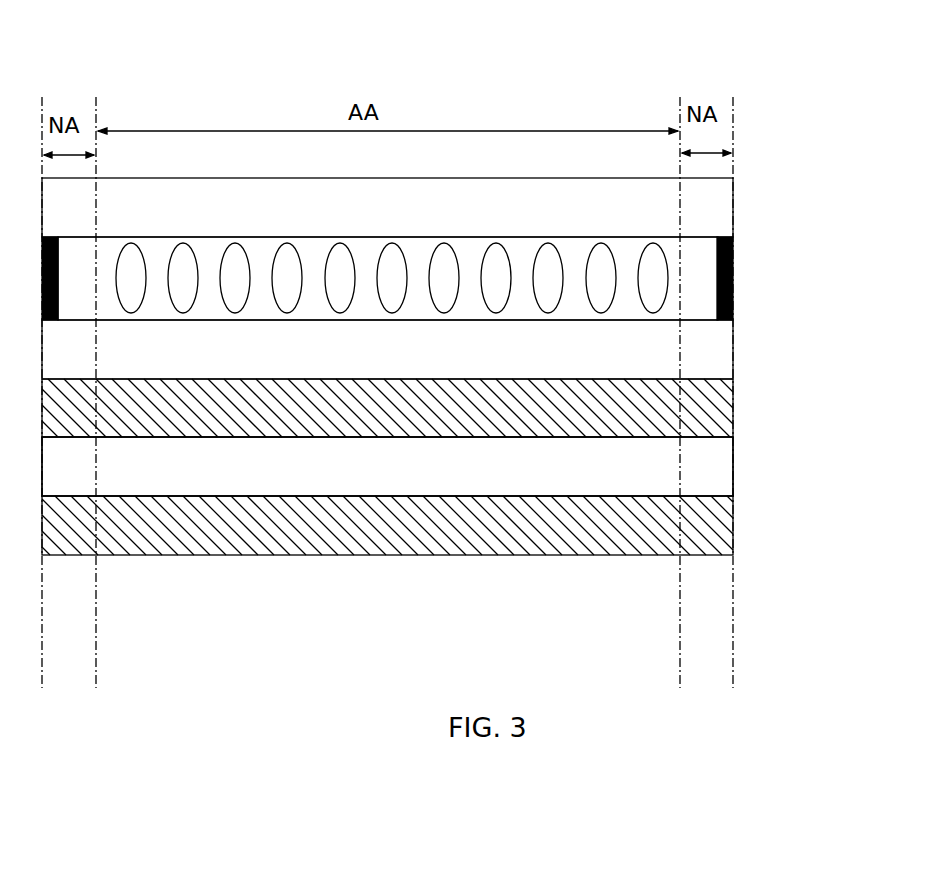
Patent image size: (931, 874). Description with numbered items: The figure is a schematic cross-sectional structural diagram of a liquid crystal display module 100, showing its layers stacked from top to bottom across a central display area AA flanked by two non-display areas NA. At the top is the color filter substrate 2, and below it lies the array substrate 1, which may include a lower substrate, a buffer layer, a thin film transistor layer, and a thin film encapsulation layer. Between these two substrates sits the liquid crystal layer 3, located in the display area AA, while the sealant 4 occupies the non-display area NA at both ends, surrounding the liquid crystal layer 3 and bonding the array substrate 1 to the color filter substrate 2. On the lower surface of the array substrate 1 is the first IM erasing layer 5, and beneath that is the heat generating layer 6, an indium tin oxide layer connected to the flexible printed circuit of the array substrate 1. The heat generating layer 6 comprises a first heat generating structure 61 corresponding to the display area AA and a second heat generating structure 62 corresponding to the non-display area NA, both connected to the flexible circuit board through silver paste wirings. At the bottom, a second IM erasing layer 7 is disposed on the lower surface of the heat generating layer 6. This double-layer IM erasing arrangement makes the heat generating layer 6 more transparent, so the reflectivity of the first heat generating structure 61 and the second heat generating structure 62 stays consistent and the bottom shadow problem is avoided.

The liquid crystal display module 100 is at (148, 65).
The array substrate 1 is at (735, 347).
The color filter substrate 2 is at (735, 207).
The liquid crystal layer 3 is at (665, 277).
The sealant 4 is at (735, 297).
The first IM erasing layer 5 is at (735, 410).
The heat generating layer 6 is at (442, 542).
The first heat generating structure 61 is at (430, 485).
The second heat generating structure 62 is at (708, 475).
The second IM erasing layer 7 is at (735, 533).